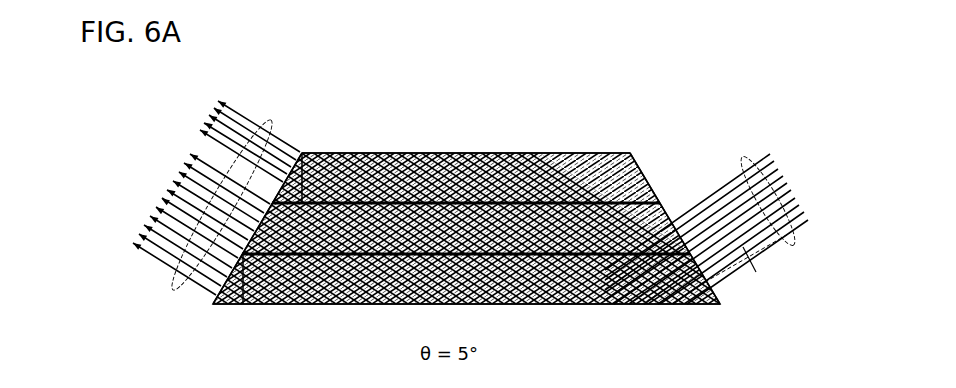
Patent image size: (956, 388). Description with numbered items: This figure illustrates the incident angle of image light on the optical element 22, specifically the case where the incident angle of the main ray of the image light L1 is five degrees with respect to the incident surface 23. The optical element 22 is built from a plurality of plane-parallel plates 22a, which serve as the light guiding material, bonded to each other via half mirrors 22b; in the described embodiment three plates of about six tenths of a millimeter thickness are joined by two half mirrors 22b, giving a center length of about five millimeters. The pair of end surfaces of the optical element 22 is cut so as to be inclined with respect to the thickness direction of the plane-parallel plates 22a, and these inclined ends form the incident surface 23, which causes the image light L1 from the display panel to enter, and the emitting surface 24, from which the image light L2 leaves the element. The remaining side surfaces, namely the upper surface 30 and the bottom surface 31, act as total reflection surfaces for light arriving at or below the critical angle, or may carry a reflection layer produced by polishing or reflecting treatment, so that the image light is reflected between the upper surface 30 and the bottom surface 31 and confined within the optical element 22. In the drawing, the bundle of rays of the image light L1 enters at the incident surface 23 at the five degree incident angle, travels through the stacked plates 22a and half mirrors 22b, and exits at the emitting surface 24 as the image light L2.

The optical element 22 is at (624, 94).
The plane-parallel plate 22a is at (560, 158).
The half mirror 22b is at (618, 202).
The incident surface 23 is at (642, 172).
The emitting surface 24 is at (285, 167).
The upper surface 30 is at (462, 151).
The bottom surface 31 is at (661, 306).
The image light L1 is at (742, 163).
The image light L2 is at (273, 132).